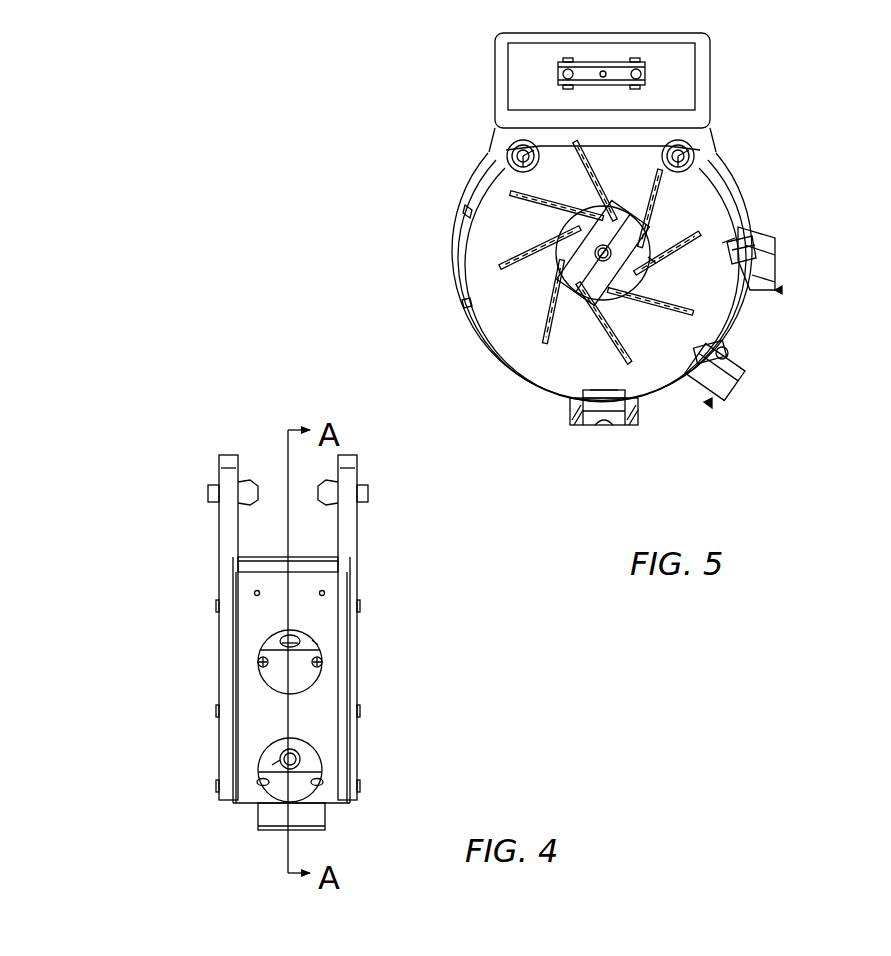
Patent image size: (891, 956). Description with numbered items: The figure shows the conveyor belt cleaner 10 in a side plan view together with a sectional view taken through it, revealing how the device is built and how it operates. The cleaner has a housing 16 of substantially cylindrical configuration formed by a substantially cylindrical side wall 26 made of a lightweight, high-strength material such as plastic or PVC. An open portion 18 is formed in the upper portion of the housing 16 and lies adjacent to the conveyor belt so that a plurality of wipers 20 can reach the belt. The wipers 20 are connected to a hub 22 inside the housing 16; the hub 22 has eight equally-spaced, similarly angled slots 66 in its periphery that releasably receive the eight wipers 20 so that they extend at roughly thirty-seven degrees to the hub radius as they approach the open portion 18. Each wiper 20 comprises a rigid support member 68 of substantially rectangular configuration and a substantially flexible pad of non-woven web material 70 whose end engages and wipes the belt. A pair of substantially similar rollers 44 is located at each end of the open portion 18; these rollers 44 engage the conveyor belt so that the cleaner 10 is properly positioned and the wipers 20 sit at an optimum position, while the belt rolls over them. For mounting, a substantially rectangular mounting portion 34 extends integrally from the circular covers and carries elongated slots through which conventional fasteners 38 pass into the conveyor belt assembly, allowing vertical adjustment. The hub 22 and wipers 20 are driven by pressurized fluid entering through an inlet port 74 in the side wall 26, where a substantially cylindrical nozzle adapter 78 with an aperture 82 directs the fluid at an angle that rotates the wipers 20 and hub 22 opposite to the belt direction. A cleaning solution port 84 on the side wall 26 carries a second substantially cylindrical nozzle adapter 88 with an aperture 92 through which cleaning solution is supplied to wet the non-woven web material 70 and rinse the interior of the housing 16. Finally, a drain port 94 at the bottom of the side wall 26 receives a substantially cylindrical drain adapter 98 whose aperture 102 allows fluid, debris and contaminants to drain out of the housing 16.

In FIG. 5, the conveyor belt cleaner 10 is at (778, 160).
In FIG. 4, the conveyor belt cleaner 10 is at (135, 575).
In FIG. 5, the housing 16 is at (462, 340).
In FIG. 4, the housing 16 is at (360, 723).
In FIG. 5, the open portion 18 is at (613, 147).
In FIG. 4, the open portion 18 is at (265, 557).
In FIG. 5, the wipers 20 is at (600, 320).
In FIG. 5, the hub 22 is at (560, 222).
In FIG. 5, the side wall 26 is at (742, 325).
In FIG. 4, the side wall 26 is at (340, 680).
In FIG. 5, the rectangular mounting portion 34 is at (712, 38).
In FIG. 4, the rectangular mounting portion 34 is at (352, 465).
In FIG. 4, the fasteners 38 is at (208, 490).
In FIG. 5, the rollers 44 is at (506, 150).
In FIG. 5, the slots 66 is at (555, 290).
In FIG. 5, the rigid support member 68 is at (656, 263).
In FIG. 5, the non-woven web material 70 is at (722, 243).
In FIG. 5, the inlet port 74 is at (781, 291).
In FIG. 4, the inlet port 74 is at (318, 645).
In FIG. 5, the nozzle adapter 78 is at (778, 268).
In FIG. 4, the nozzle adapter 78 is at (278, 680).
In FIG. 5, the aperture 82 is at (773, 240).
In FIG. 4, the aperture 82 is at (262, 643).
In FIG. 5, the cleaning solution port 84 is at (708, 405).
In FIG. 4, the cleaning solution port 84 is at (272, 765).
In FIG. 5, the nozzle adapter 88 is at (720, 390).
In FIG. 4, the nozzle adapter 88 is at (280, 745).
In FIG. 5, the aperture 92 is at (735, 355).
In FIG. 4, the aperture 92 is at (305, 760).
In FIG. 5, the drain port 94 is at (568, 418).
In FIG. 4, the drain port 94 is at (258, 820).
In FIG. 5, the drain adapter 98 is at (640, 410).
In FIG. 4, the drain adapter 98 is at (322, 820).
In FIG. 5, the aperture 102 is at (606, 425).